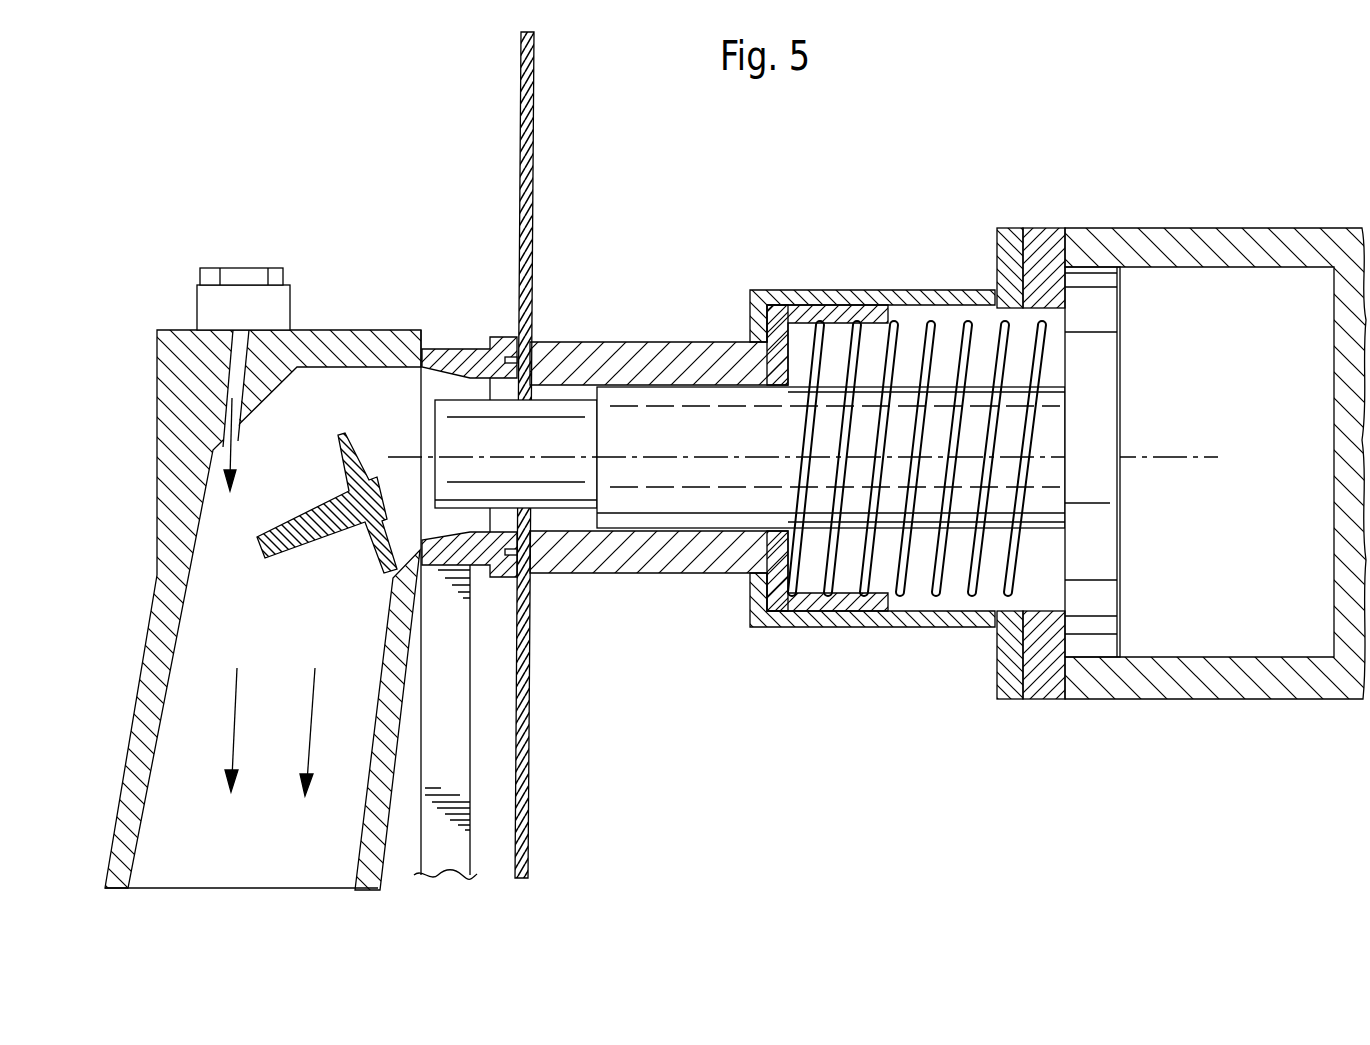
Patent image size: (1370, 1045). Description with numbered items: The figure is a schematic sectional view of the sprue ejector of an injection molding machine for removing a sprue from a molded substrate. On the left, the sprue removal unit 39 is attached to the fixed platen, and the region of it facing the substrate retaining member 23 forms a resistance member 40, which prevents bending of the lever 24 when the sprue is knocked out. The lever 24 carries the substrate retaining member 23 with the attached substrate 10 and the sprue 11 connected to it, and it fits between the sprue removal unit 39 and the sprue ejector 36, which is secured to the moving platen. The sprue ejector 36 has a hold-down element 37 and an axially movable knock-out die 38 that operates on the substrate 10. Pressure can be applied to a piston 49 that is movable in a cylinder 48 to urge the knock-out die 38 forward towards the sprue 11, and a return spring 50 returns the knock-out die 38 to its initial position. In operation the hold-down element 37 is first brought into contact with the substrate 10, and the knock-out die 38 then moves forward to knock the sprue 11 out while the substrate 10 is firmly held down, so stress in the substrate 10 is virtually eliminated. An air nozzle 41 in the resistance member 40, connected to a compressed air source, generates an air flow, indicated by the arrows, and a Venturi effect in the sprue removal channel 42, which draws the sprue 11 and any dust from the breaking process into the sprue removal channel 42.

The substrate 10 is at (534, 103).
The sprue 11 is at (335, 546).
The substrate retaining member 23 is at (462, 346).
The lever 24 is at (461, 770).
The sprue ejector 36 is at (909, 226).
The hold-down element 37 is at (598, 362).
The knock-out die 38 is at (565, 487).
The sprue removal unit 39 is at (382, 248).
The resistance member 40 is at (186, 399).
The air nozzle 41 is at (240, 372).
The sprue removal channel 42 is at (184, 704).
The cylinder 48 is at (1270, 246).
The piston 49 is at (1108, 300).
The return spring 50 is at (968, 330).